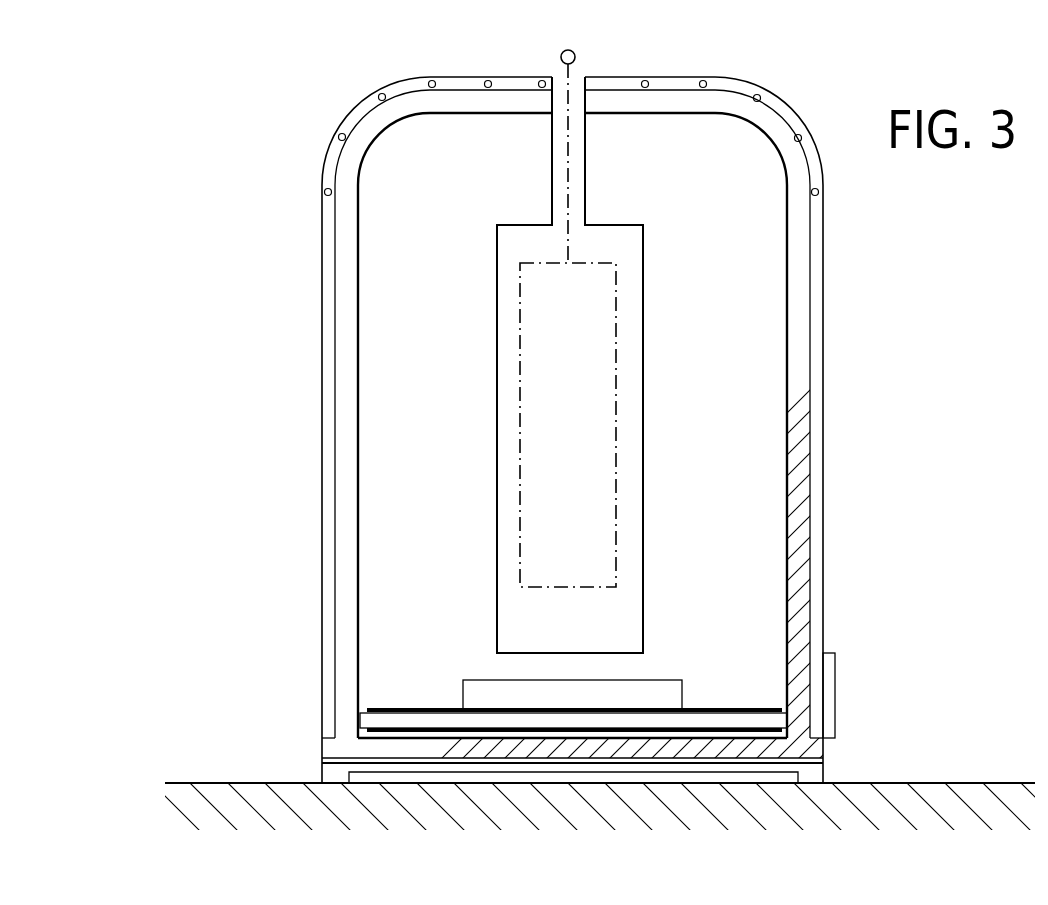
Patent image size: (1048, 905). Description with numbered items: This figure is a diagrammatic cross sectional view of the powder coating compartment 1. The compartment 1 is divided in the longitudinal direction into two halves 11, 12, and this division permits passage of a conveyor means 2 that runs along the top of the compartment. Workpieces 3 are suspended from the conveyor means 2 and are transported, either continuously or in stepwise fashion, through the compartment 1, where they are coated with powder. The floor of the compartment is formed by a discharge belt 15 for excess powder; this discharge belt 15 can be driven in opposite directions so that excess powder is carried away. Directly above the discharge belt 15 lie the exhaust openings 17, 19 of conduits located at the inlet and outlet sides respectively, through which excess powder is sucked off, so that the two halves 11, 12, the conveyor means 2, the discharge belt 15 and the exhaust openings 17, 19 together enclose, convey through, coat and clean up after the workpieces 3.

The compartment 1 is at (600, 450).
The conveyor means 2 is at (574, 51).
The workpieces 3 is at (603, 333).
The half of the compartment 11 is at (322, 243).
The half of the compartment 12 is at (823, 252).
The discharge belt 15 is at (481, 732).
The exhaust opening 17 is at (537, 666).
The exhaust opening 19 is at (488, 696).